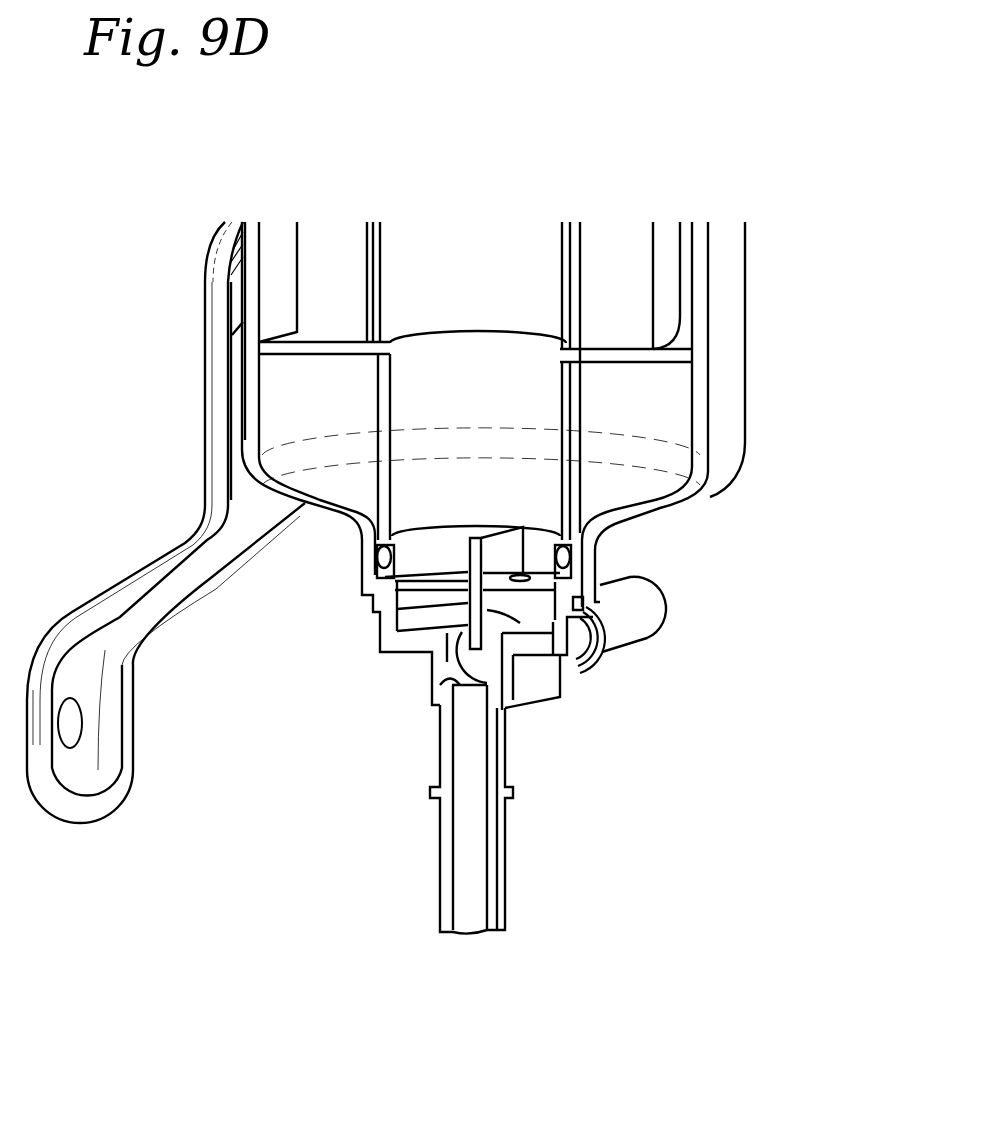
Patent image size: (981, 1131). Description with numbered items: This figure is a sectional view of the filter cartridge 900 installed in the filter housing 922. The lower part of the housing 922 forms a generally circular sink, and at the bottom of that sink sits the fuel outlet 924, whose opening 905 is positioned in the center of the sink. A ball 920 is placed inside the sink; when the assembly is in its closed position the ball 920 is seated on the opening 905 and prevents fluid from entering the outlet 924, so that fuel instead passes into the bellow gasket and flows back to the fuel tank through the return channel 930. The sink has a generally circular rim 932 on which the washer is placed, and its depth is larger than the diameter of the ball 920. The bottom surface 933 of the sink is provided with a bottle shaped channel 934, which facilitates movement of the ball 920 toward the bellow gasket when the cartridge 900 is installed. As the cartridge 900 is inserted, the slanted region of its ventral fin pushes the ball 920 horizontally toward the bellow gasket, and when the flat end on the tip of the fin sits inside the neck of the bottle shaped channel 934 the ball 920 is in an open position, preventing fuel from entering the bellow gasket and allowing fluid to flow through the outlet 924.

The filter housing 922 is at (755, 353).
The cartridge 900 is at (577, 478).
The bottom surface 933 is at (417, 620).
The bottle shaped channel 934 is at (455, 653).
The opening 905 is at (455, 682).
The ball 920 is at (492, 658).
The fuel outlet 924 is at (472, 847).
The return channel 930 is at (660, 605).
The rim 932 is at (553, 600).